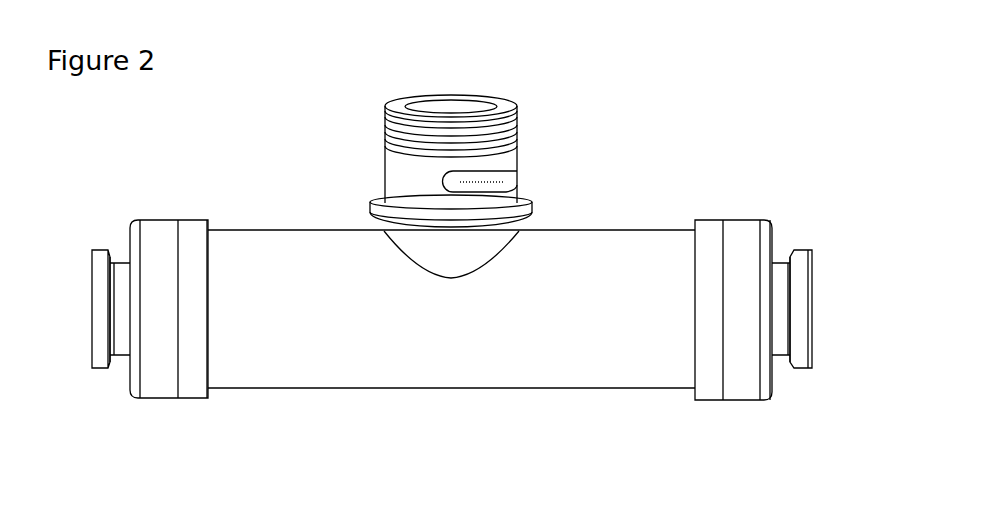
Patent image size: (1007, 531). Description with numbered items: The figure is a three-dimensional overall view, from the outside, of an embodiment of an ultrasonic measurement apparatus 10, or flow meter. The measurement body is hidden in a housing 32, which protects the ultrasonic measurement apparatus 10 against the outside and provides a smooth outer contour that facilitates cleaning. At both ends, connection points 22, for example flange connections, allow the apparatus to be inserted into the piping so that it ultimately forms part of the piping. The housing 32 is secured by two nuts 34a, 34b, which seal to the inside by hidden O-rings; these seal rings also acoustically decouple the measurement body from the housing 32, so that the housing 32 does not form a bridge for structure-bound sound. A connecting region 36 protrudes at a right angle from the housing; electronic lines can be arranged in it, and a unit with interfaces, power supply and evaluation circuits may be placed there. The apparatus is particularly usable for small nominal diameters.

The ultrasonic measurement apparatus 10 is at (690, 72).
The connection points 22 is at (102, 307).
The housing 32 is at (388, 350).
The nut 34a is at (155, 368).
The nut 34b is at (742, 375).
The connecting region 36 is at (483, 153).